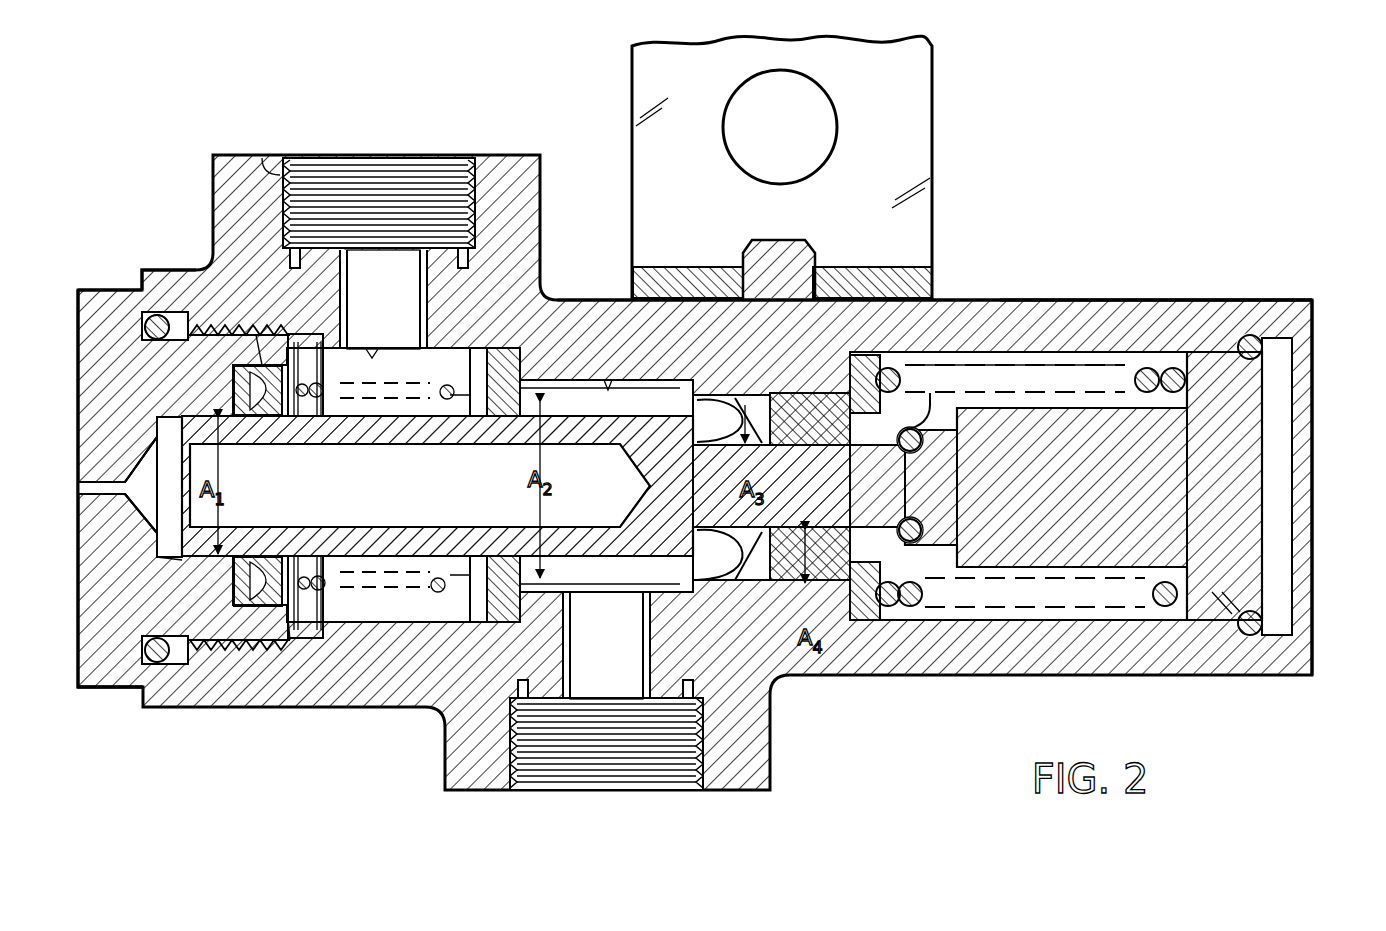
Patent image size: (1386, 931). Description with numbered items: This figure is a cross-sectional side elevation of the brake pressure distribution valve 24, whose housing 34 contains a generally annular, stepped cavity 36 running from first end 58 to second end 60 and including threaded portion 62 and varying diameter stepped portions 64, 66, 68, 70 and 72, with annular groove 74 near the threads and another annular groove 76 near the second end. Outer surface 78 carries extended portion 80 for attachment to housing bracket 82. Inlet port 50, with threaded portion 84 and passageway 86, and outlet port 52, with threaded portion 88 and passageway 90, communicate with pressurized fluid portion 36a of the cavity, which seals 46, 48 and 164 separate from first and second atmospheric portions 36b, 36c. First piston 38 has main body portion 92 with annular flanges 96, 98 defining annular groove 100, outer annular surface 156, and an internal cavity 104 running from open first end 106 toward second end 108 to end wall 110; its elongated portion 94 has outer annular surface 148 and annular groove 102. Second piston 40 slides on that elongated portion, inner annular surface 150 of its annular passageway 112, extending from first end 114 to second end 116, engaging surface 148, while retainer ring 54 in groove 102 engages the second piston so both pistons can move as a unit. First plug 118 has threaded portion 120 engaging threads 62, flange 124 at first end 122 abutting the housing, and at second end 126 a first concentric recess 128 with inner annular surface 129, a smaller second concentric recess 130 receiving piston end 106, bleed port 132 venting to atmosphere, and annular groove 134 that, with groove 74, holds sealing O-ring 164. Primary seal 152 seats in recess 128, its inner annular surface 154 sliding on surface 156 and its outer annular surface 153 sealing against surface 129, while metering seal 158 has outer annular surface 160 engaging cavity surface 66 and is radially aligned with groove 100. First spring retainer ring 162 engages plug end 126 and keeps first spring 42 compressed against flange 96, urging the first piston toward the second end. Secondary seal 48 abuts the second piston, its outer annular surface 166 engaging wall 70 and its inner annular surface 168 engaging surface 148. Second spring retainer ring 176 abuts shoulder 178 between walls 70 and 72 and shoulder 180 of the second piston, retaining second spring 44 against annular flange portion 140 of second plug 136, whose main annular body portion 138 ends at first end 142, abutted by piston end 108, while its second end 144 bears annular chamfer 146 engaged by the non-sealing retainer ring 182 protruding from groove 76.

The brake pressure distribution valve 24 is at (1045, 236).
The housing 34 is at (1168, 297).
The cavity 36 is at (652, 586).
The pressurized fluid portion 36a is at (645, 388).
The first atmospheric portion 36b is at (170, 440).
The second atmospheric portion 36c is at (1045, 380).
The first piston 38 is at (570, 388).
The second piston 40 is at (817, 396).
The first spring 42 is at (445, 388).
The second spring 44 is at (1148, 368).
The first seal 46 is at (234, 385).
The second seal 48 is at (760, 398).
The inlet port 50 is at (440, 185).
The outlet port 52 is at (672, 780).
The retainer ring 54 is at (913, 520).
The first end 58 is at (142, 275).
The second end 60 is at (1314, 322).
The threaded portion 62 is at (222, 323).
The stepped portion 64 is at (303, 335).
The stepped portion 66 is at (373, 352).
The stepped portion 68 is at (608, 385).
The stepped portion 70 is at (783, 400).
The stepped portion 72 is at (990, 362).
The annular groove 74 is at (162, 314).
The annular groove 76 is at (1250, 335).
The outer surface 78 is at (1122, 300).
The extended portion 80 is at (797, 242).
The housing bracket 82 is at (933, 152).
The threaded portion 84 is at (262, 160).
The passageway 86 is at (420, 290).
The threaded portion 88 is at (510, 790).
The passageway 90 is at (645, 668).
The main body portion 92 is at (393, 590).
The elongated portion 94 is at (855, 500).
The annular flange 96 is at (460, 594).
The annular flange 98 is at (562, 566).
The annular groove 100 is at (500, 470).
The annular groove 102 is at (958, 450).
The cavity 104 is at (398, 505).
The first end 106 is at (157, 545).
The second end 108 is at (958, 487).
The end wall 110 is at (625, 510).
The annular passageway 112 is at (785, 448).
The first end 114 is at (790, 583).
The second end 116 is at (958, 542).
The first plug 118 is at (76, 355).
The threaded portion 120 is at (200, 648).
The first end 122 is at (76, 668).
The flange 124 is at (105, 690).
The second end 126 is at (292, 648).
The first concentric recess 128 is at (255, 652).
The inner annular surface 129 is at (236, 322).
The second concentric recess 130 is at (168, 562).
The bleed port 132 is at (76, 490).
The annular groove 134 is at (185, 342).
The second plug 136 is at (1264, 450).
The main annular body portion 138 is at (1086, 493).
The annular flange portion 140 is at (1215, 622).
The first end 142 is at (958, 430).
The second end 144 is at (1294, 500).
The annular chamfer 146 is at (1058, 589).
The outer annular surface 148 is at (822, 532).
The inner annular surface 150 is at (850, 525).
The primary seal 152 is at (234, 590).
The outer annular surface 153 is at (262, 362).
The inner annular surface 154 is at (250, 478).
The outer annular surface 156 is at (350, 556).
The metering seal 158 is at (518, 447).
The outer annular surface 160 is at (502, 350).
The first spring retainer ring 162 is at (330, 628).
The sealing O-ring 164 is at (144, 326).
The outer annular surface 166 is at (762, 583).
The inner annular surface 168 is at (735, 530).
The second spring retainer ring 176 is at (865, 380).
The shoulder 178 is at (866, 622).
The shoulder 180 is at (882, 573).
The retainer ring 182 is at (1254, 636).